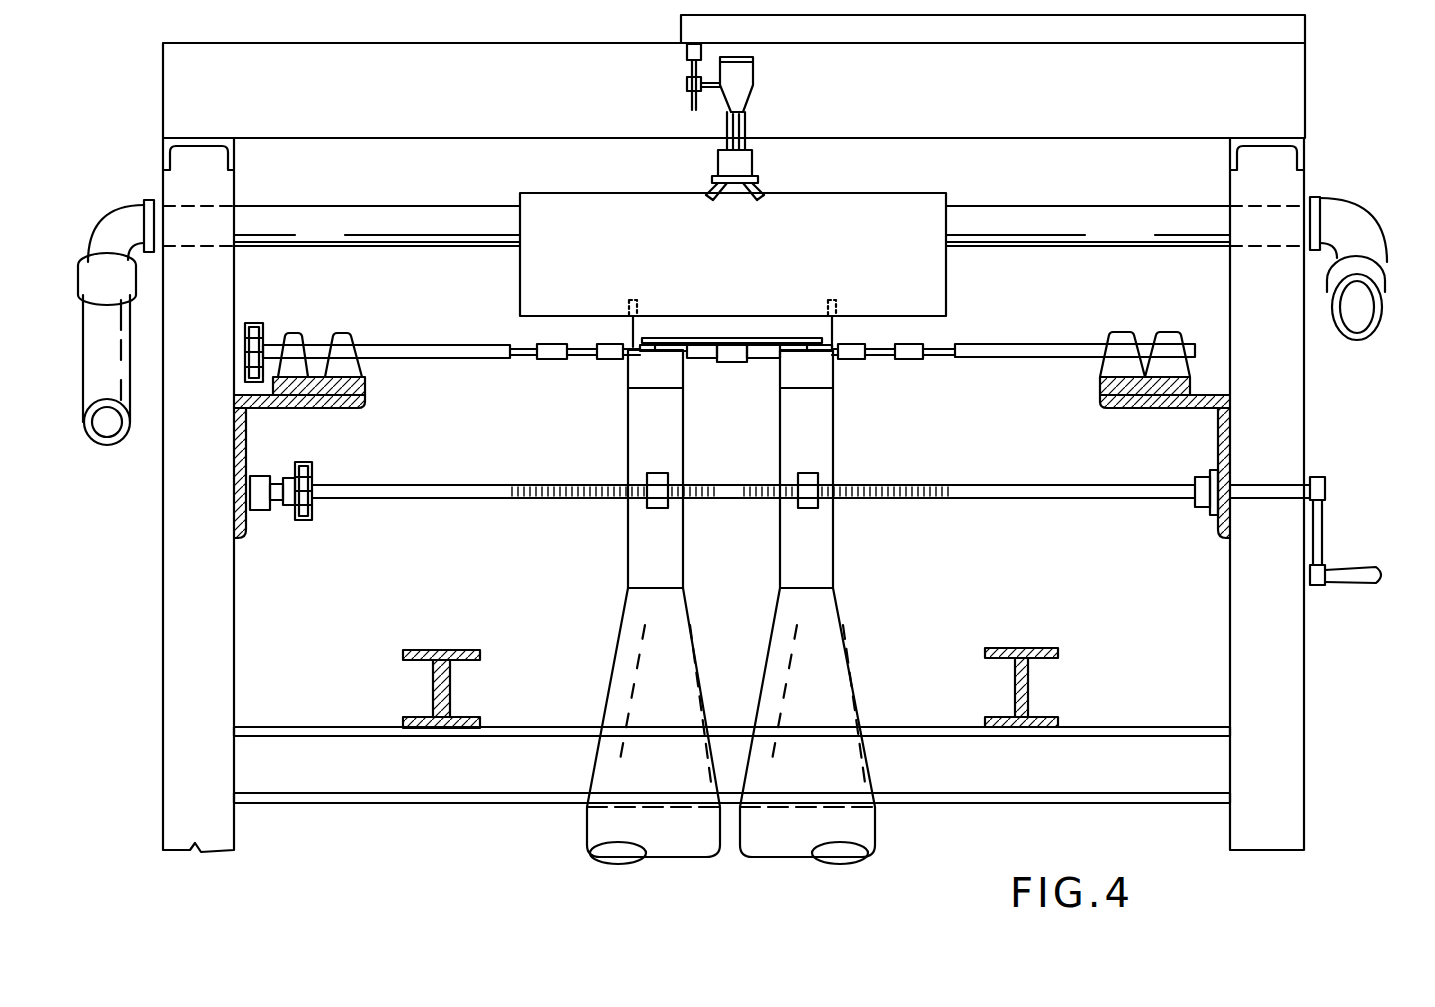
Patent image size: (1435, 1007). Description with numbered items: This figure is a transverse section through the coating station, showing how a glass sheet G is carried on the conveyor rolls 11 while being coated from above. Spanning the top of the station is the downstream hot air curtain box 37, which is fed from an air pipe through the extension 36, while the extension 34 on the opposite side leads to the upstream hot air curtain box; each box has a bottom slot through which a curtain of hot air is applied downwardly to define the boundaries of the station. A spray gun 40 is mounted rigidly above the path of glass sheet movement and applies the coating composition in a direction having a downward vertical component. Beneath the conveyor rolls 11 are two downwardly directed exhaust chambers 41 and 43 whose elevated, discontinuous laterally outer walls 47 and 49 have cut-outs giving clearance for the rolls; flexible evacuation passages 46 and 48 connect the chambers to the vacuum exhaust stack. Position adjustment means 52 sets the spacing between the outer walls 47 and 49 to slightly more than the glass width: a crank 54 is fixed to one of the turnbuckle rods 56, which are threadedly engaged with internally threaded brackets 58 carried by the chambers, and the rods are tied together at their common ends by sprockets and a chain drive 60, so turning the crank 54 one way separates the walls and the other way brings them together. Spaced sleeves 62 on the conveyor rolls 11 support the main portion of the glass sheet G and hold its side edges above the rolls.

The conveyor rolls 11 is at (458, 345).
The extension 34 is at (90, 355).
The extension 36 is at (1378, 305).
The downstream hot air curtain box 37 is at (748, 257).
The spray gun 40 is at (753, 85).
The exhaust chamber 41 is at (645, 375).
The exhaust chamber 43 is at (822, 374).
The evacuation passage 46 is at (590, 840).
The outer wall 47 is at (628, 331).
The evacuation passage 48 is at (870, 837).
The outer wall 49 is at (838, 331).
The position adjustment means 52 is at (1357, 492).
The crank 54 is at (1323, 542).
The turnbuckle rods 56 is at (1042, 487).
The internally threaded brackets 58 is at (658, 473).
The chain drive 60 is at (312, 465).
The sleeves 62 is at (731, 362).
The glass sheets G is at (770, 329).